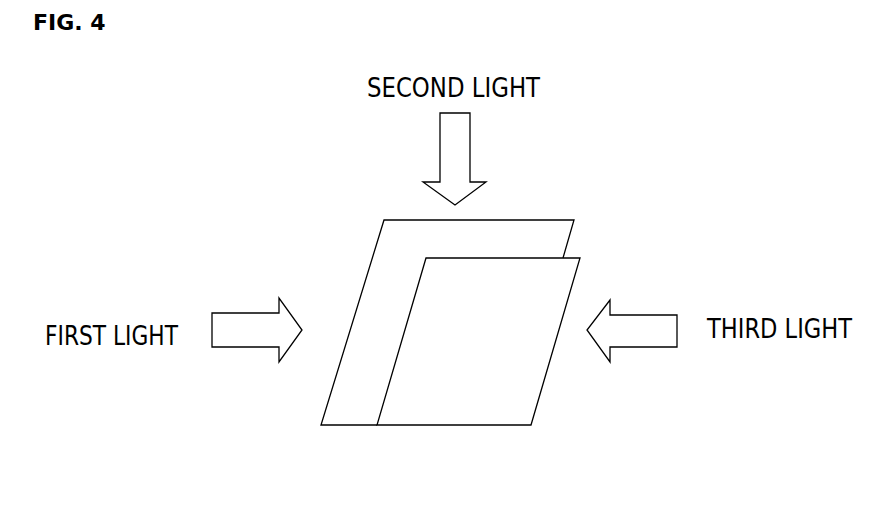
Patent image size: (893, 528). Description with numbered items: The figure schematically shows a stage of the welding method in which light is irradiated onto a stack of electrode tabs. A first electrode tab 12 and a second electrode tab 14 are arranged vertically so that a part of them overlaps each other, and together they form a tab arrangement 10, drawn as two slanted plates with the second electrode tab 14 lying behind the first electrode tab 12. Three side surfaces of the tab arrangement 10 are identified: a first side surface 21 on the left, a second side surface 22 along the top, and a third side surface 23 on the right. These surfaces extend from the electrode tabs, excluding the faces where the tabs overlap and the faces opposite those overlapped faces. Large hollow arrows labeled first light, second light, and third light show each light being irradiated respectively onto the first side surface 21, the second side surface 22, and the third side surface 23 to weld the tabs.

The tab arrangement 10 is at (238, 134).
The first electrode tab 12 is at (462, 400).
The second electrode tab 14 is at (410, 245).
The first side surface 21 is at (328, 381).
The second side surface 22 is at (540, 219).
The third side surface 23 is at (544, 388).